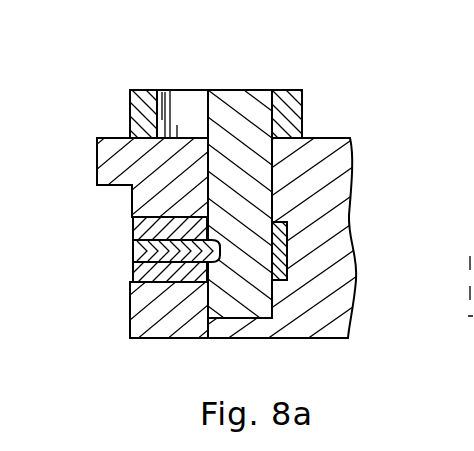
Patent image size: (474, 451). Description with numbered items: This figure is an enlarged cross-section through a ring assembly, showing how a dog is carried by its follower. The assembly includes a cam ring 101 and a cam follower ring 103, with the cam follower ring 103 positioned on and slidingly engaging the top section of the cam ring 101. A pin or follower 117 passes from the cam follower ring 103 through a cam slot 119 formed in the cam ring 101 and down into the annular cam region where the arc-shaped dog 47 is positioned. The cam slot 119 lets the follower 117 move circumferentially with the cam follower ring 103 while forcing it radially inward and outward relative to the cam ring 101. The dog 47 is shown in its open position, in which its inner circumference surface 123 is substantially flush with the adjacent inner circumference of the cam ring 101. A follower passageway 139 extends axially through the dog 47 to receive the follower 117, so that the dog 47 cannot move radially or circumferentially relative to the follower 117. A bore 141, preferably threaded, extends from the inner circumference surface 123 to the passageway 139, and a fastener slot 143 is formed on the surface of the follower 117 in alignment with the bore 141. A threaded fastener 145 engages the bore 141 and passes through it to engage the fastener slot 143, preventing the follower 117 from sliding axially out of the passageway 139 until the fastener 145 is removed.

The cam ring 101 is at (320, 150).
The follower 117 is at (235, 105).
The cam slot 119 is at (183, 102).
The cam follower ring 103 is at (142, 110).
The follower passageway 139 is at (157, 216).
The dog 47 is at (138, 236).
The threaded fastener 145 is at (133, 250).
The bore 141 is at (133, 268).
The inner circumference surface 123 is at (130, 290).
The fastener slot 143 is at (205, 260).